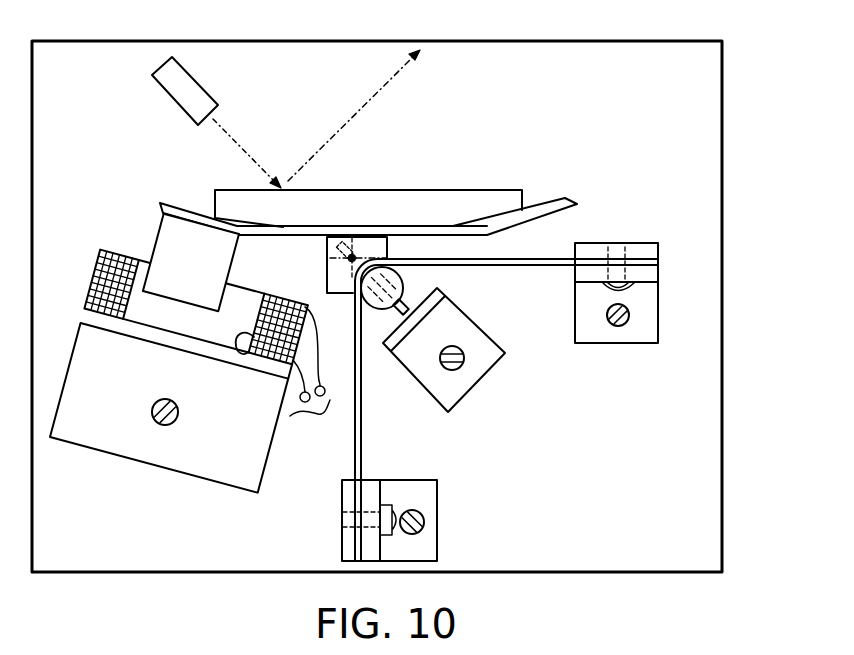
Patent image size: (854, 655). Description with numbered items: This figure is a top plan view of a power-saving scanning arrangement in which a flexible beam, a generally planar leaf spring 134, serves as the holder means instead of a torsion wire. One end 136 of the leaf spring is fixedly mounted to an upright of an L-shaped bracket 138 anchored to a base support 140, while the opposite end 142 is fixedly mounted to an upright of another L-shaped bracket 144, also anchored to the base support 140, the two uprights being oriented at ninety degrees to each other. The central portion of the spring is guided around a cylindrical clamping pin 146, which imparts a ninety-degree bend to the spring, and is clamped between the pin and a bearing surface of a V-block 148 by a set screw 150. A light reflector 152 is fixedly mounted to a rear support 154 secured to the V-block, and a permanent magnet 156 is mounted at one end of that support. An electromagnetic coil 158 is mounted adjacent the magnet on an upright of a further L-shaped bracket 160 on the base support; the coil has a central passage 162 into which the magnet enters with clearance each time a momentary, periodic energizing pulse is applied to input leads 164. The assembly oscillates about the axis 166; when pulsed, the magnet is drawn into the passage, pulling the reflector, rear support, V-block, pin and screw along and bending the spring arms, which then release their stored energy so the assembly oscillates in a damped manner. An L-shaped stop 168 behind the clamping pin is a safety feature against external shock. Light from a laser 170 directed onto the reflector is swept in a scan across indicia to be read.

The leaf spring 134 is at (548, 276).
The one end of leaf spring 136 is at (358, 540).
The L-shaped bracket 138 is at (404, 487).
The base support 140 is at (735, 306).
The opposite end of leaf spring 142 is at (640, 262).
The L-shaped bracket 144 is at (640, 323).
The clamping pin 146 is at (403, 276).
The V-block 148 is at (328, 279).
The set screw 150 is at (394, 304).
The light reflector 152 is at (493, 207).
The rear support 154 is at (573, 200).
The permanent magnet 156 is at (183, 228).
The electromagnetic coil 158 is at (95, 247).
The L-shaped bracket 160 is at (251, 448).
The central passage 162 is at (240, 365).
The input leads 164 is at (329, 412).
The axis 166 is at (356, 257).
The L-shaped stop 168 is at (480, 360).
The laser 170 is at (192, 96).